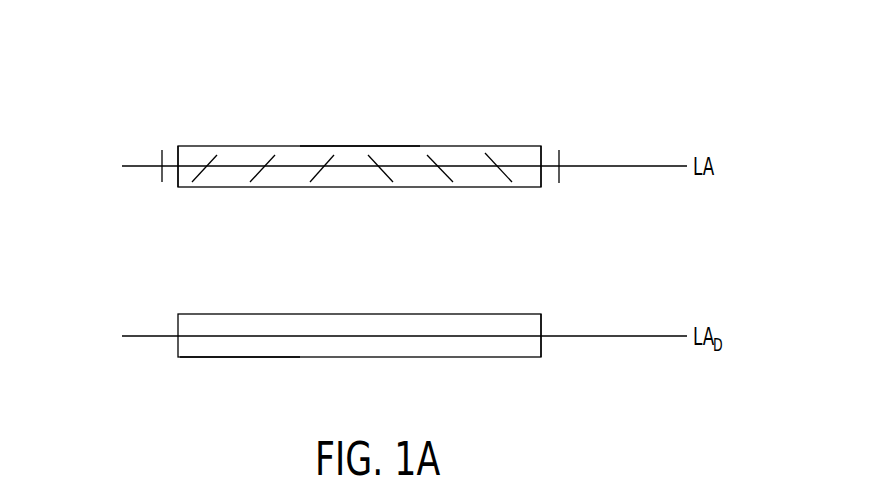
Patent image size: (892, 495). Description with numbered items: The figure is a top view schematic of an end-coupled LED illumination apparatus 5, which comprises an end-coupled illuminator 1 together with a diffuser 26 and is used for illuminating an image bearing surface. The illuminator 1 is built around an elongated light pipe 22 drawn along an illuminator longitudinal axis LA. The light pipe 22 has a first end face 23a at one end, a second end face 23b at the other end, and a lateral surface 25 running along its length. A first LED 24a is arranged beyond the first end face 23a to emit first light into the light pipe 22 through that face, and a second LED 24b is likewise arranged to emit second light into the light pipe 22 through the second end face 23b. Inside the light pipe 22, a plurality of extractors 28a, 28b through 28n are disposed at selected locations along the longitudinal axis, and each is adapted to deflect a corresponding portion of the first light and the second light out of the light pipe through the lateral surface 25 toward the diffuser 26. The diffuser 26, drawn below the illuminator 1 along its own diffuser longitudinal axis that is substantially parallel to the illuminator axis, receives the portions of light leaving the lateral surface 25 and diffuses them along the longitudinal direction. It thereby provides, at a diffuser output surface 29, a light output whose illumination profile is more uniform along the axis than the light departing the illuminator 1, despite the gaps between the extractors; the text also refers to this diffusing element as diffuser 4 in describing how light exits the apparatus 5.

The end-coupled illuminator 1 is at (639, 144).
The diffuser 4 is at (542, 338).
The illumination apparatus 5 is at (545, 75).
The light pipe 22 is at (233, 146).
The first end face 23a is at (177, 186).
The second end face 23b is at (542, 184).
The first LED 24a is at (160, 158).
The second LED 24b is at (559, 153).
The lateral surface 25 is at (349, 146).
The diffuser 26 is at (347, 314).
The extractor 28a is at (200, 173).
The extractor 28b is at (260, 173).
The extractor 28n is at (503, 170).
The diffuser output surface 29 is at (215, 358).